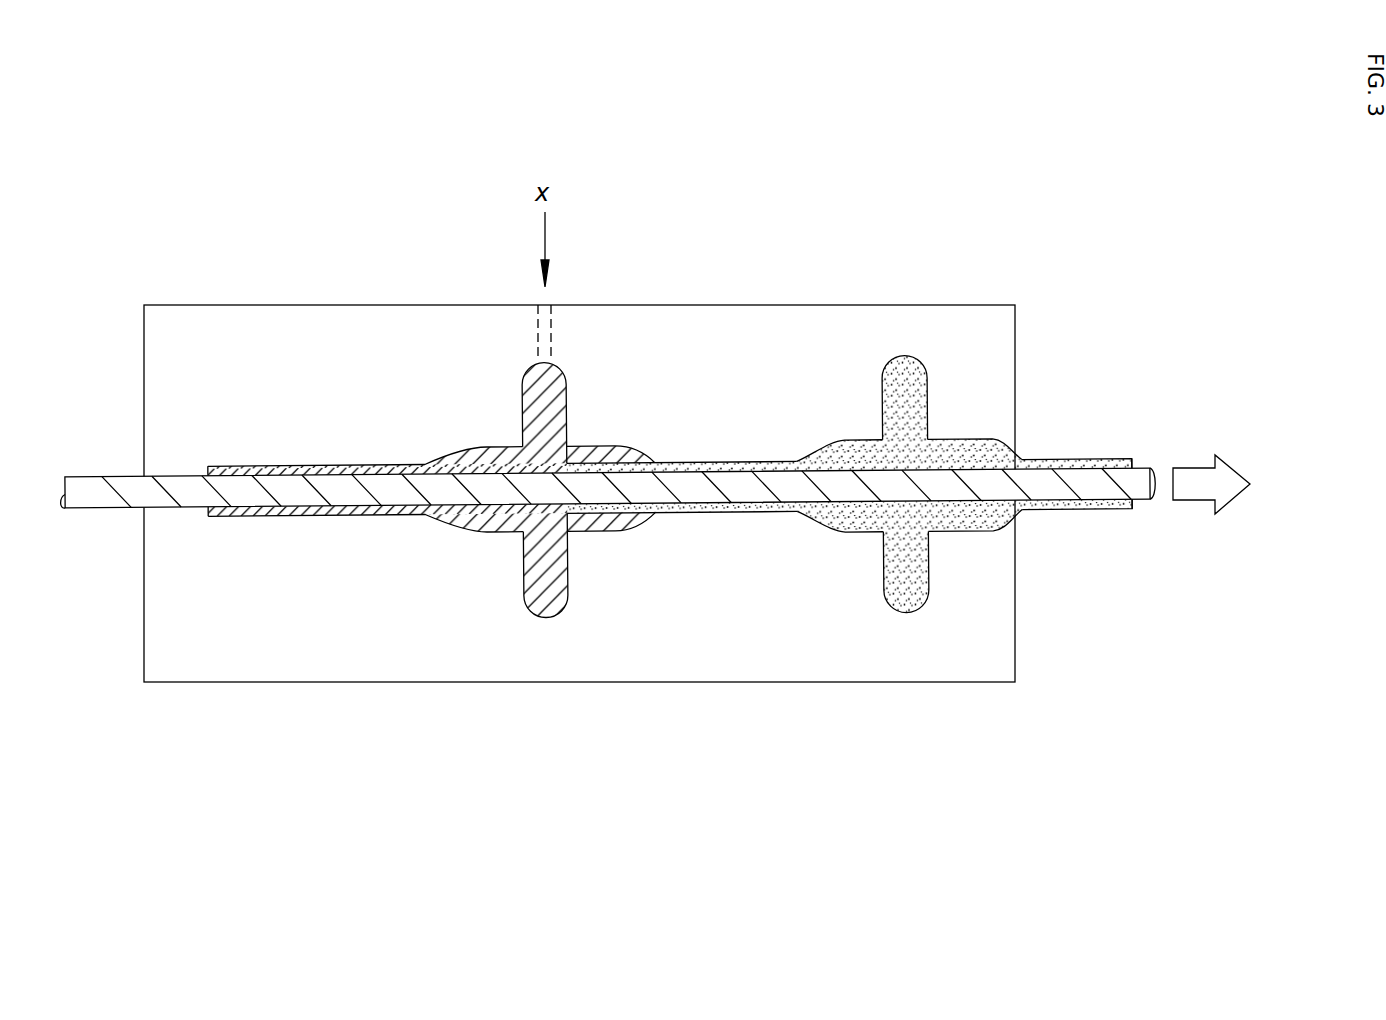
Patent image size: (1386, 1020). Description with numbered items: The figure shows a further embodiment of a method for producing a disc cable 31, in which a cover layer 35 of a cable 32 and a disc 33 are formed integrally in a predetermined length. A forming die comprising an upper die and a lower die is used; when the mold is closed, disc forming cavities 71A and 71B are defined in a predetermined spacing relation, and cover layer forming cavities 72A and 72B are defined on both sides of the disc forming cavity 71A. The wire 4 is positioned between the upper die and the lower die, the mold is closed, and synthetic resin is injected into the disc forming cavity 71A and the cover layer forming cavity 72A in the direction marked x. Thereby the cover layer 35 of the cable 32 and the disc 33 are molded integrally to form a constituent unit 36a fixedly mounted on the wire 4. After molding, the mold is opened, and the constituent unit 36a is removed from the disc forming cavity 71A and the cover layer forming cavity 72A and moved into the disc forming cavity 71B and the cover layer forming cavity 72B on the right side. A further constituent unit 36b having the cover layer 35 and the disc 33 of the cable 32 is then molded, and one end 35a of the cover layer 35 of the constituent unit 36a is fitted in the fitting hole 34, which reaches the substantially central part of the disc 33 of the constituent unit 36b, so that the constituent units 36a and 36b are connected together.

The wire 4 is at (118, 474).
The disc cable 31 is at (1069, 306).
The cable 32 is at (1090, 461).
The disc 33 is at (566, 402).
The fitting hole 34 is at (648, 462).
The cover layer 35 is at (342, 520).
The one end of cover layer 35a is at (622, 513).
The constituent unit 36a is at (860, 530).
The constituent unit 36b is at (455, 455).
The disc forming cavity 71A is at (497, 450).
The disc forming cavity 71B is at (965, 444).
The cover layer forming cavity 72A is at (318, 466).
The cover layer forming cavity 72B is at (745, 462).